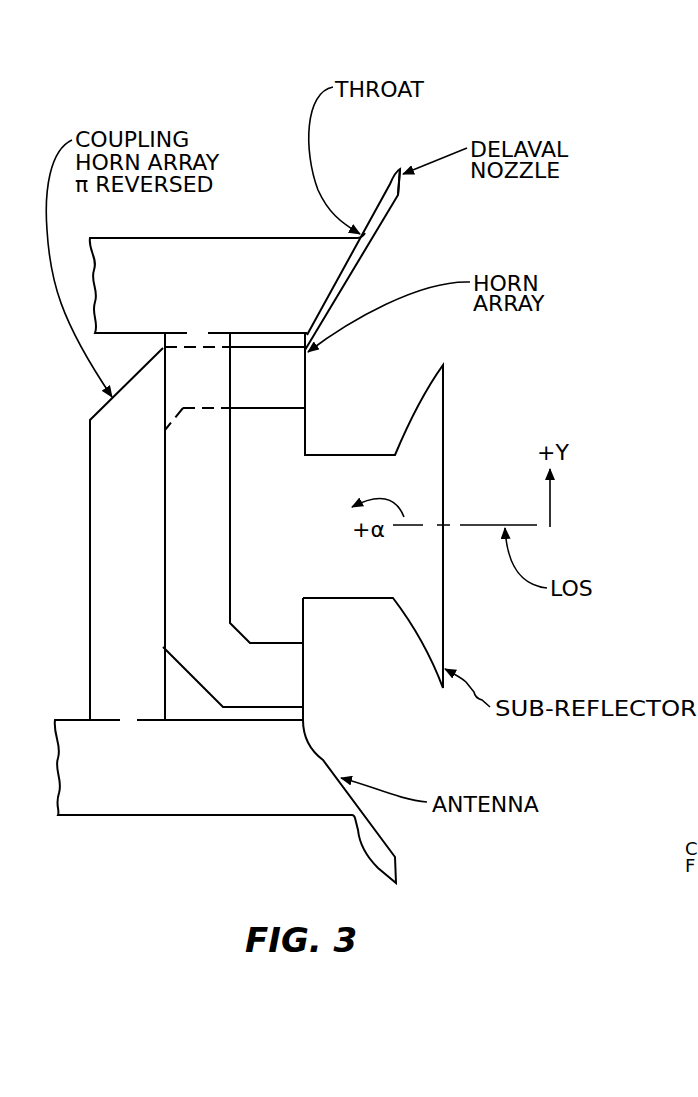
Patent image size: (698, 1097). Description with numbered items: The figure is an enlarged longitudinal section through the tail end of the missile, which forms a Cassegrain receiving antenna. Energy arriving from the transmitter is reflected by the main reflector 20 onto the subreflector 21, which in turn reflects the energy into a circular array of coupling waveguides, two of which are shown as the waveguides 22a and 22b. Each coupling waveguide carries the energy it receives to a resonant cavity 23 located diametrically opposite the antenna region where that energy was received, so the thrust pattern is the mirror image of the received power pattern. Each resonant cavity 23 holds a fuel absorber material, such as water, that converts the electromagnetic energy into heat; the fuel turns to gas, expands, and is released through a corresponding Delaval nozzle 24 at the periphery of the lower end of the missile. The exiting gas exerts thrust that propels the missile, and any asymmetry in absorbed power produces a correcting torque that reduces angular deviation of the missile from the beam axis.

The main reflector 20 is at (350, 268).
The subreflector 21 is at (417, 393).
The coupling waveguide 22a is at (265, 643).
The coupling waveguide 22b is at (253, 408).
The resonant cavity 23 is at (233, 294).
The Delaval nozzle 24 is at (387, 177).